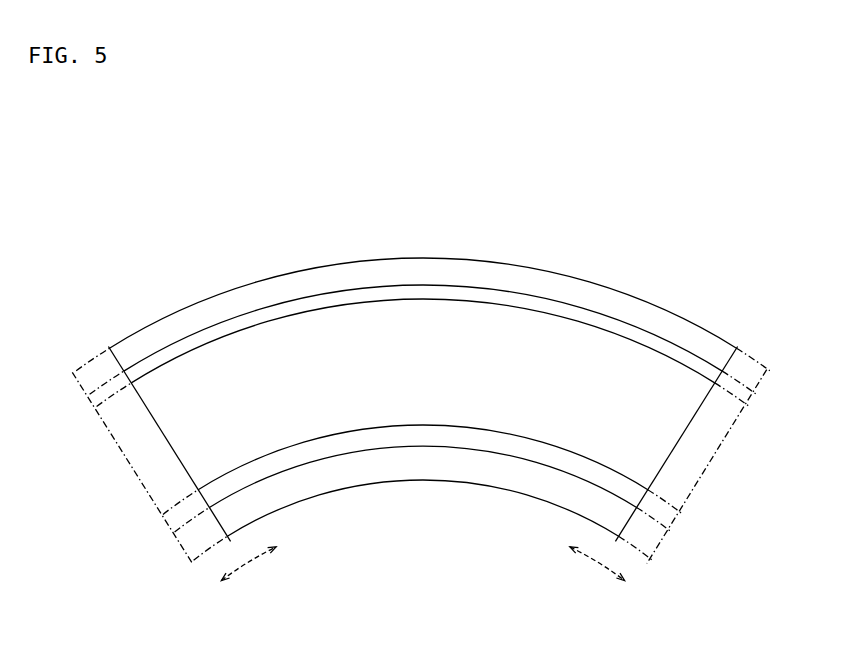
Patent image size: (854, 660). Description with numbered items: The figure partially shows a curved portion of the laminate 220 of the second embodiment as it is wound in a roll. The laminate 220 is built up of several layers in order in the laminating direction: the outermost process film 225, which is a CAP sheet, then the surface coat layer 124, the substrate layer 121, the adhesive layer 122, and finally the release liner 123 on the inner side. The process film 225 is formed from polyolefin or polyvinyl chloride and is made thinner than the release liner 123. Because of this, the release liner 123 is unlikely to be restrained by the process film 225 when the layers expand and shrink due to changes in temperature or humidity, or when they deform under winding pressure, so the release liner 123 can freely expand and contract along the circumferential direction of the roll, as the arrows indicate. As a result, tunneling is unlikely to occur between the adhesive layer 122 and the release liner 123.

The laminate 220 is at (263, 257).
The process film 225 is at (433, 273).
The surface coat layer 124 is at (608, 325).
The substrate layer 121 is at (638, 367).
The adhesive layer 122 is at (490, 442).
The release liner 123 is at (422, 463).